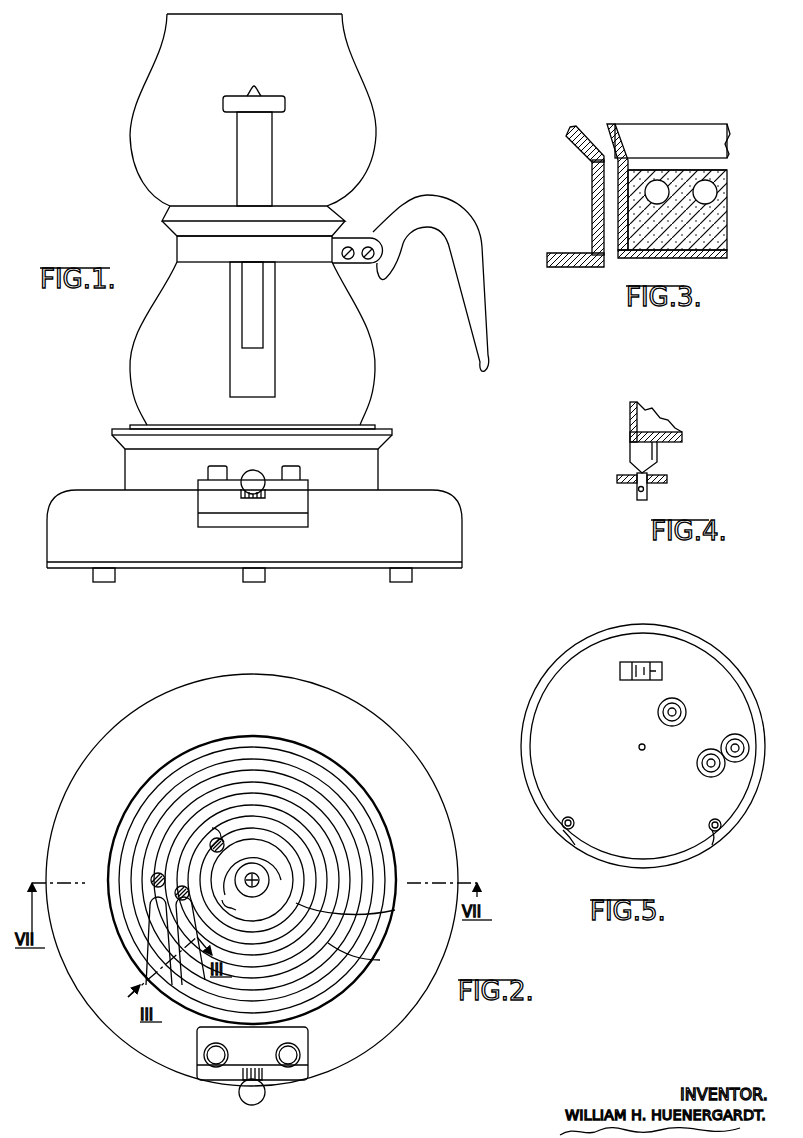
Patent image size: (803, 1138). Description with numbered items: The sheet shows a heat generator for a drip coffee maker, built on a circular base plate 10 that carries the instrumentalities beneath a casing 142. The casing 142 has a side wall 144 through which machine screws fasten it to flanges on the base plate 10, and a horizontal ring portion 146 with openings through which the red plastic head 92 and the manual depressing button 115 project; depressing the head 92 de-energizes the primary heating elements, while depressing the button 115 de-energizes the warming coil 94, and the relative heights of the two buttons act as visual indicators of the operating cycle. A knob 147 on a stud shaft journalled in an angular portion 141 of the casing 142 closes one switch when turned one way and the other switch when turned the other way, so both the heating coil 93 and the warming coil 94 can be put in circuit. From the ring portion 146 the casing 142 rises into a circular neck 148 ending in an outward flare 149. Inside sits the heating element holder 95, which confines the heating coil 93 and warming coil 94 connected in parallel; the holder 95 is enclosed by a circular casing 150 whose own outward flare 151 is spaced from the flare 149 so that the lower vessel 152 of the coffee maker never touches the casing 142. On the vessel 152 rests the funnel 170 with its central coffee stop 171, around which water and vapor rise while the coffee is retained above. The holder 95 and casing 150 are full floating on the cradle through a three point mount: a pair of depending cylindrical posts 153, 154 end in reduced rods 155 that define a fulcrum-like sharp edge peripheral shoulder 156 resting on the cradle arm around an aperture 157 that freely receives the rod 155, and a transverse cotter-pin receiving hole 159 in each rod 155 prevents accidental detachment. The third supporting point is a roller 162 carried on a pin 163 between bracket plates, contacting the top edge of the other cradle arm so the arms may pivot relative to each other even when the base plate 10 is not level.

In FIG. 1, the circular base plate 10 is at (462, 566).
In FIG. 1, the red plastic head 92 is at (208, 472).
In FIG. 2, the red plastic head 92 is at (208, 1057).
In FIG. 2, the heating coil 93 is at (364, 956).
In FIG. 2, the warming coil 94 is at (355, 910).
In FIG. 3, the heating element holder 95 is at (657, 176).
In FIG. 5, the heating element holder 95 is at (558, 720).
In FIG. 2, the heating element holder 95 is at (368, 860).
In FIG. 1, the manual depressing button 115 is at (300, 472).
In FIG. 2, the manual depressing button 115 is at (297, 1052).
In FIG. 1, the angular portion 141 is at (212, 503).
In FIG. 2, the angular portion 141 is at (302, 1076).
In FIG. 1, the casing 142 is at (462, 514).
In FIG. 2, the casing 142 is at (353, 700).
In FIG. 1, the side wall 144 is at (462, 540).
In FIG. 1, the horizontal ring portion 146 is at (405, 492).
In FIG. 3, the horizontal ring portion 146 is at (548, 255).
In FIG. 2, the horizontal ring portion 146 is at (352, 767).
In FIG. 1, the knob 147 is at (262, 490).
In FIG. 2, the knob 147 is at (259, 1096).
In FIG. 1, the circular neck 148 is at (378, 465).
In FIG. 3, the circular neck 148 is at (592, 210).
In FIG. 1, the outward flare 149 is at (112, 433).
In FIG. 3, the outward flare 149 is at (570, 135).
In FIG. 2, the outward flare 149 is at (368, 793).
In FIG. 3, the circular casing 150 is at (616, 180).
In FIG. 4, the circular casing 150 is at (628, 414).
In FIG. 5, the circular casing 150 is at (562, 652).
In FIG. 1, the outward flare 151 is at (278, 412).
In FIG. 3, the outward flare 151 is at (613, 125).
In FIG. 5, the outward flare 151 is at (536, 684).
In FIG. 1, the lower vessel 152 is at (363, 368).
In FIG. 4, the depending cylindrical post 153 is at (630, 452).
In FIG. 5, the depending cylindrical post 153 is at (713, 832).
In FIG. 5, the depending cylindrical post 154 is at (571, 832).
In FIG. 4, the reduced rod 155 is at (640, 502).
In FIG. 5, the reduced rod 155 is at (573, 818).
In FIG. 4, the sharp edge peripheral shoulder 156 is at (657, 455).
In FIG. 4, the aperture 157 is at (632, 480).
In FIG. 4, the cotter-pin receiving hole 159 is at (650, 493).
In FIG. 5, the roller 162 is at (643, 662).
In FIG. 5, the pin 163 is at (662, 672).
In FIG. 1, the funnel 170 is at (362, 90).
In FIG. 1, the central coffee stop 171 is at (262, 150).